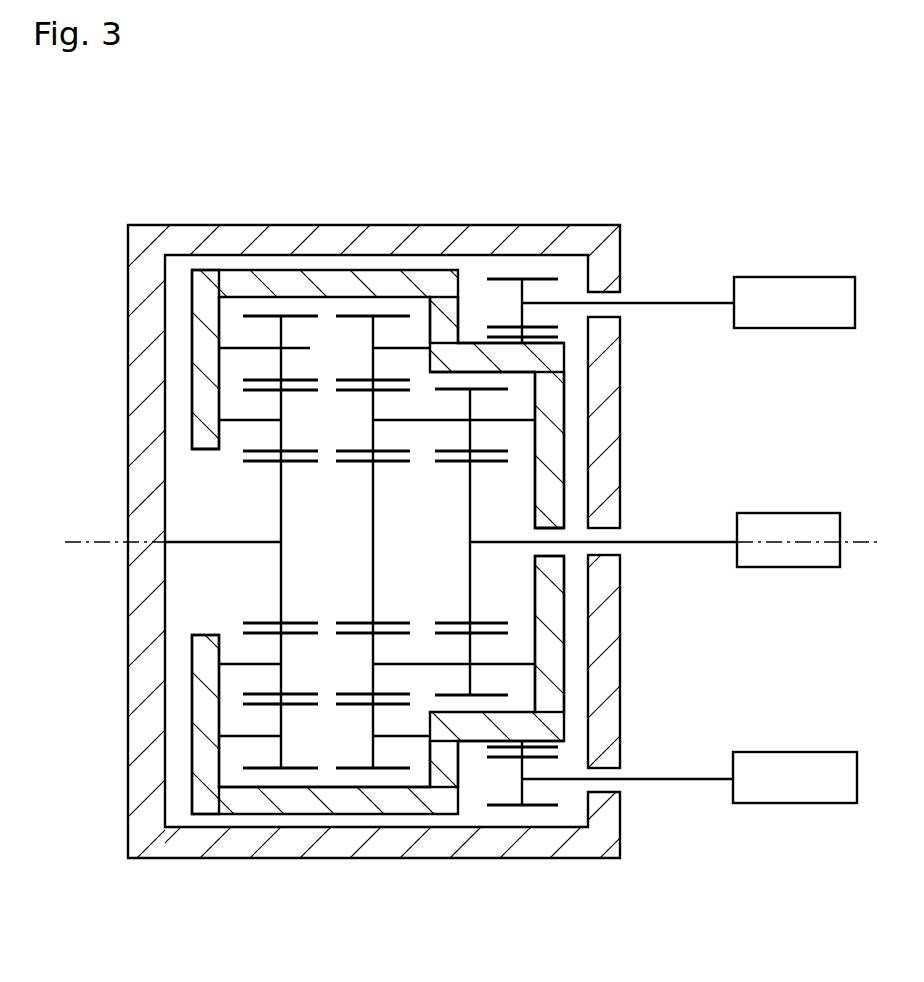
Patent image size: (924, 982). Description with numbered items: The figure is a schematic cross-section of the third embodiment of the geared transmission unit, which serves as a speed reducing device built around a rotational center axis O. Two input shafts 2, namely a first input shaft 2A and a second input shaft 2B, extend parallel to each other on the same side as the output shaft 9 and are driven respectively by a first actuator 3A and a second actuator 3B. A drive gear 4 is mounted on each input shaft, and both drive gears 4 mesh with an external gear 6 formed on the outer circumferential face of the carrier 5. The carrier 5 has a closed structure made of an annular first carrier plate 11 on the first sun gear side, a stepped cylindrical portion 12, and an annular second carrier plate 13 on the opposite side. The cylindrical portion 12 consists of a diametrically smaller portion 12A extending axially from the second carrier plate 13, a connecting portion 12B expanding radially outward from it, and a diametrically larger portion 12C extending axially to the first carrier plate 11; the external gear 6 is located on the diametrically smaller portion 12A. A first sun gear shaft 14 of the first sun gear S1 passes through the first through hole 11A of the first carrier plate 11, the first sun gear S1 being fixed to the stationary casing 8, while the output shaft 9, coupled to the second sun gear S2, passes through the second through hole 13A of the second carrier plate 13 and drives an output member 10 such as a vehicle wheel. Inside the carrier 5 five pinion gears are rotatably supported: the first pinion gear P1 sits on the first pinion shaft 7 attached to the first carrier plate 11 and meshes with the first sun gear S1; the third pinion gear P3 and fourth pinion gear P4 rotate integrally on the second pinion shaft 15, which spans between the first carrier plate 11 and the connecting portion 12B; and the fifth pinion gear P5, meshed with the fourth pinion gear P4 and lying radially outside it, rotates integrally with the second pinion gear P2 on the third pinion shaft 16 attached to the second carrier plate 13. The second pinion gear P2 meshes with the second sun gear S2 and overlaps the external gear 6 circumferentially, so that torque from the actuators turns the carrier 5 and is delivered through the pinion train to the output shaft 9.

The input shafts 2 is at (628, 518).
The first input shaft 2A is at (660, 303).
The second input shaft 2B is at (660, 778).
The first actuator 3A is at (783, 277).
The second actuator 3B is at (783, 752).
The drive gear 4 is at (542, 278).
The carrier 5 is at (377, 262).
The external gear 6 is at (492, 340).
The first pinion shaft 7 is at (238, 420).
The casing 8 is at (138, 475).
The output shaft 9 is at (716, 542).
The output member 10 is at (778, 513).
The first carrier plate 11 is at (198, 362).
The first through hole 11A is at (200, 453).
The cylindrical portion 12 is at (480, 912).
The diametrically smaller portion 12A is at (475, 728).
The connecting portion 12B is at (447, 755).
The diametrically larger portion 12C is at (351, 803).
The second carrier plate 13 is at (548, 430).
The second through hole 13A is at (548, 533).
The first sun gear shaft 14 is at (198, 541).
The second pinion shaft 15 is at (310, 348).
The third pinion shaft 16 is at (418, 420).
The first pinion gear P1 is at (253, 633).
The second pinion gear P2 is at (493, 633).
The third pinion gear P3 is at (250, 313).
The fourth pinion gear P4 is at (350, 313).
The fifth pinion gear P5 is at (350, 462).
The first sun gear S1 is at (260, 465).
The second sun gear S2 is at (447, 463).
The rotational center axis O is at (820, 542).